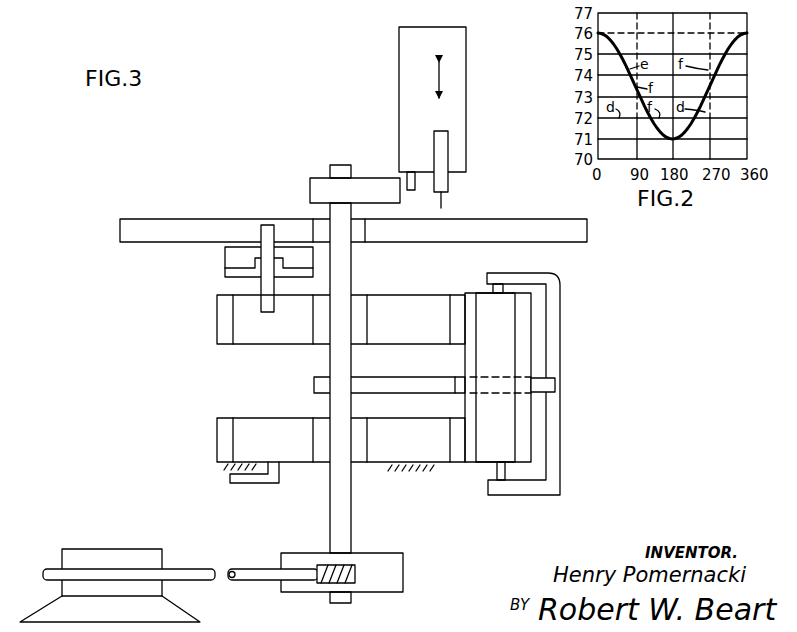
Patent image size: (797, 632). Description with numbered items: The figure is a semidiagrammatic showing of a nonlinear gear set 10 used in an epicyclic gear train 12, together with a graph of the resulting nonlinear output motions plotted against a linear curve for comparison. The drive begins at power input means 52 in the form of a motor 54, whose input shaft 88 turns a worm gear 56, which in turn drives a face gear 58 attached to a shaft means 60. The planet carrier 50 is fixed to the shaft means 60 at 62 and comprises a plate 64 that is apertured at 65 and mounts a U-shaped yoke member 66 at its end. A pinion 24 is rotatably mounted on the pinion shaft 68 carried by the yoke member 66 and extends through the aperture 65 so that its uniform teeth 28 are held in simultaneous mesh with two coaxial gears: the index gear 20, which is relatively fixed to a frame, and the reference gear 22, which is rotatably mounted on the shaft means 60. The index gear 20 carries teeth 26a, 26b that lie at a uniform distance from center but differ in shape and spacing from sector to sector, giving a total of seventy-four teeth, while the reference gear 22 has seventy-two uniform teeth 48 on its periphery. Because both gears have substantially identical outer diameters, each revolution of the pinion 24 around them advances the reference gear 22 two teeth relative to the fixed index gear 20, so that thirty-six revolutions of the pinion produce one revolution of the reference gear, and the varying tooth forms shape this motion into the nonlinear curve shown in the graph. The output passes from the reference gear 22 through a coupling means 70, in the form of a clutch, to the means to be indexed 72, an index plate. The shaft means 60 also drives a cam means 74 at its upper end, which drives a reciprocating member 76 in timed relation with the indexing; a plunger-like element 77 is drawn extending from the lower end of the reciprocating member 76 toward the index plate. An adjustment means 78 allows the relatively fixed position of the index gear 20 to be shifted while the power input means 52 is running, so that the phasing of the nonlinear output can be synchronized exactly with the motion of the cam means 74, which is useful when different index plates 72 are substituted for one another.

The nonlinear gear set 10 is at (386, 403).
The epicyclic gear train 12 is at (320, 386).
The index gear 20 is at (297, 464).
The reference gear 22 is at (416, 310).
The pinion 24 is at (514, 360).
The index gear teeth 26a is at (224, 446).
The index gear teeth 26b is at (457, 463).
The pinion teeth 28 is at (527, 452).
The reference gear teeth 48 is at (228, 318).
The planet carrier 50 is at (431, 378).
The power input means 52 is at (198, 590).
The motor 54 is at (160, 548).
The worm gear 56 is at (322, 584).
The face gear 58 is at (375, 585).
The shaft means 60 is at (352, 540).
The fixing point 62 is at (351, 378).
The plate 64 is at (391, 393).
The aperture 65 is at (556, 386).
The yoke member 66 is at (557, 323).
The pinion shaft 68 is at (503, 284).
The coupling means 70 is at (228, 262).
The index plate 72 is at (230, 220).
The cam means 74 is at (312, 181).
The reciprocating member 76 is at (399, 121).
The plunger 77 is at (445, 206).
The adjustment means 78 is at (245, 478).
The input shaft 88 is at (243, 569).